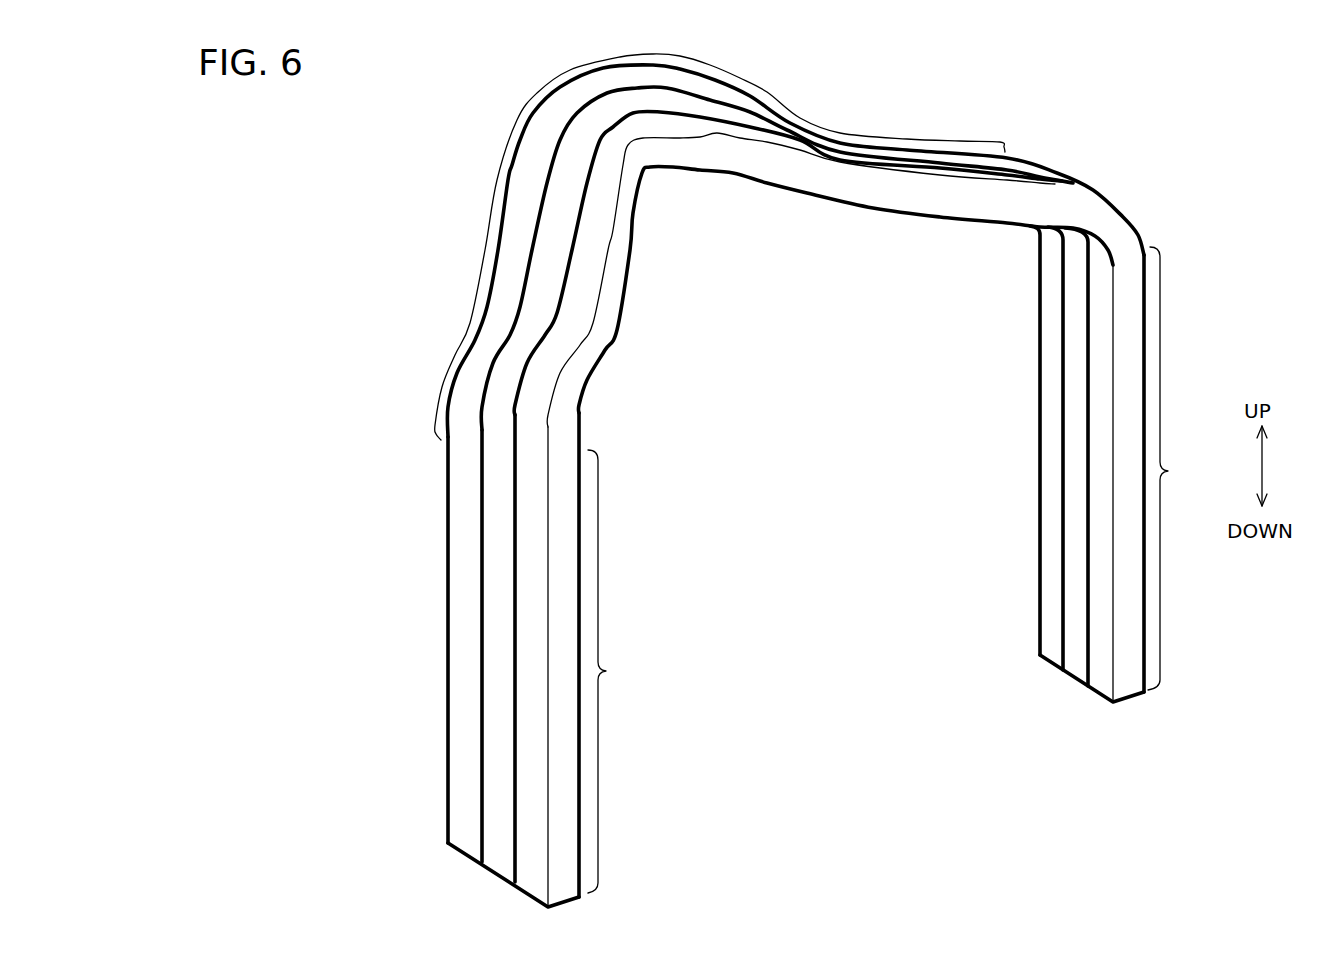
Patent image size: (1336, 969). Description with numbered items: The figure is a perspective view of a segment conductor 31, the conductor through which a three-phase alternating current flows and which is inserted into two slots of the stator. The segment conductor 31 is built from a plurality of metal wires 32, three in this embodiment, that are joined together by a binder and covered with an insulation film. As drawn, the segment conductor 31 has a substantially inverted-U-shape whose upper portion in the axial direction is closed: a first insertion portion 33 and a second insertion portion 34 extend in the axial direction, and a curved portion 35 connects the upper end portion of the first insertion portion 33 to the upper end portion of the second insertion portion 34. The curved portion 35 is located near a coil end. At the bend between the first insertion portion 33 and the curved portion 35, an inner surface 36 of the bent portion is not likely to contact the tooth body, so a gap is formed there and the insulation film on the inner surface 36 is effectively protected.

The segment conductor 31 is at (398, 204).
The metal wires 32 is at (533, 730).
The first insertion portion 33 is at (614, 671).
The second insertion portion 34 is at (1176, 468).
The curved portion 35 is at (527, 108).
The inner surface of the bent portion 36 is at (583, 413).